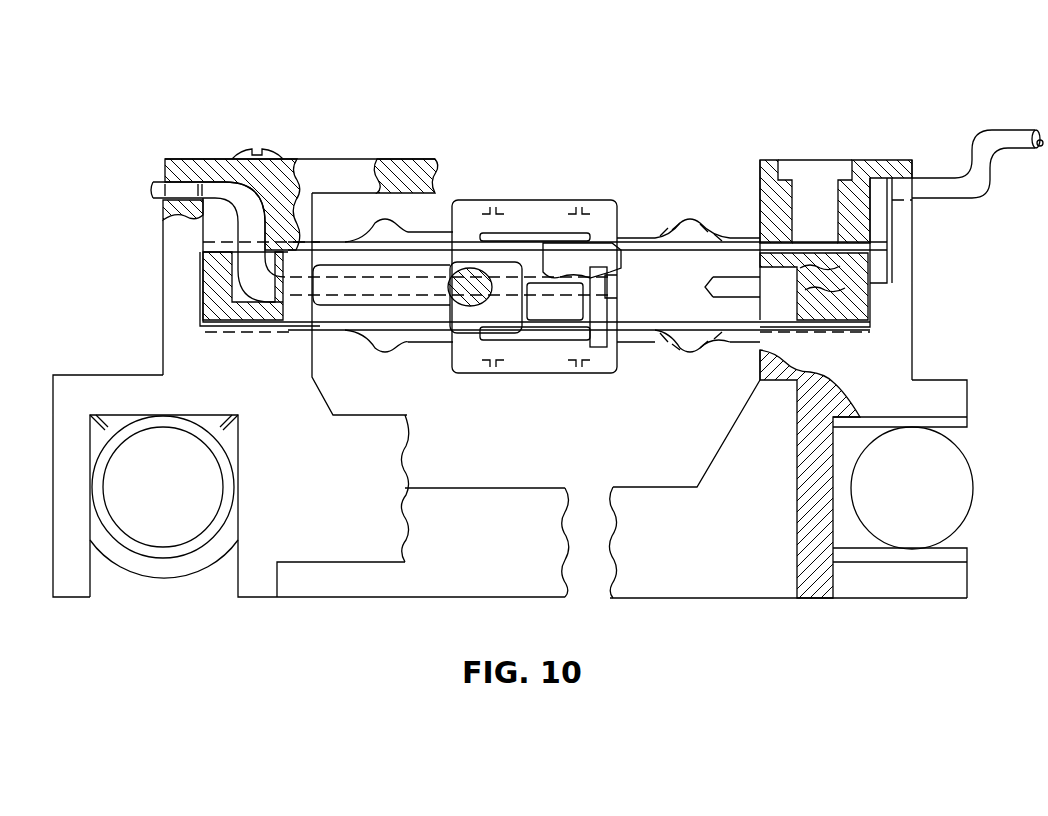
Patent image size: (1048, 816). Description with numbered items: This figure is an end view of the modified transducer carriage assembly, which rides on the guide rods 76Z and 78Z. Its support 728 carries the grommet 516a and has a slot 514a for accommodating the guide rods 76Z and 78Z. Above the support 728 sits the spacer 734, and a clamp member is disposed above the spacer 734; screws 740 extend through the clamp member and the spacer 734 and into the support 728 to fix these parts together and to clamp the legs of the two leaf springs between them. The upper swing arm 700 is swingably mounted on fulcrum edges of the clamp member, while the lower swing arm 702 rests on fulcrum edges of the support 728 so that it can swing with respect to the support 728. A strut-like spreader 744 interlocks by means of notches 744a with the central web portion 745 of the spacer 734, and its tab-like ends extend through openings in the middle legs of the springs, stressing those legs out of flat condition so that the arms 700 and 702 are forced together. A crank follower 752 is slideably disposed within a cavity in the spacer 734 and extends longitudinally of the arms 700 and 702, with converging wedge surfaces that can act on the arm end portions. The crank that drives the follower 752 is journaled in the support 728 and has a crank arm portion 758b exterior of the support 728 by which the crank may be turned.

The screws 740 is at (238, 150).
The strut-like spreader 744 is at (535, 200).
The notches 744a is at (612, 289).
The swing arm 700 is at (692, 222).
The swing arm 702 is at (691, 352).
The central web portion 745 is at (737, 277).
The spacer 734 is at (215, 283).
The crank follower 752 is at (294, 326).
The crank arm portion 758b is at (1010, 128).
The guide rod 76Z is at (176, 483).
The guide rod 78Z is at (925, 483).
The grommet 516a is at (128, 573).
The slot 514a is at (937, 489).
The support 728 is at (806, 600).